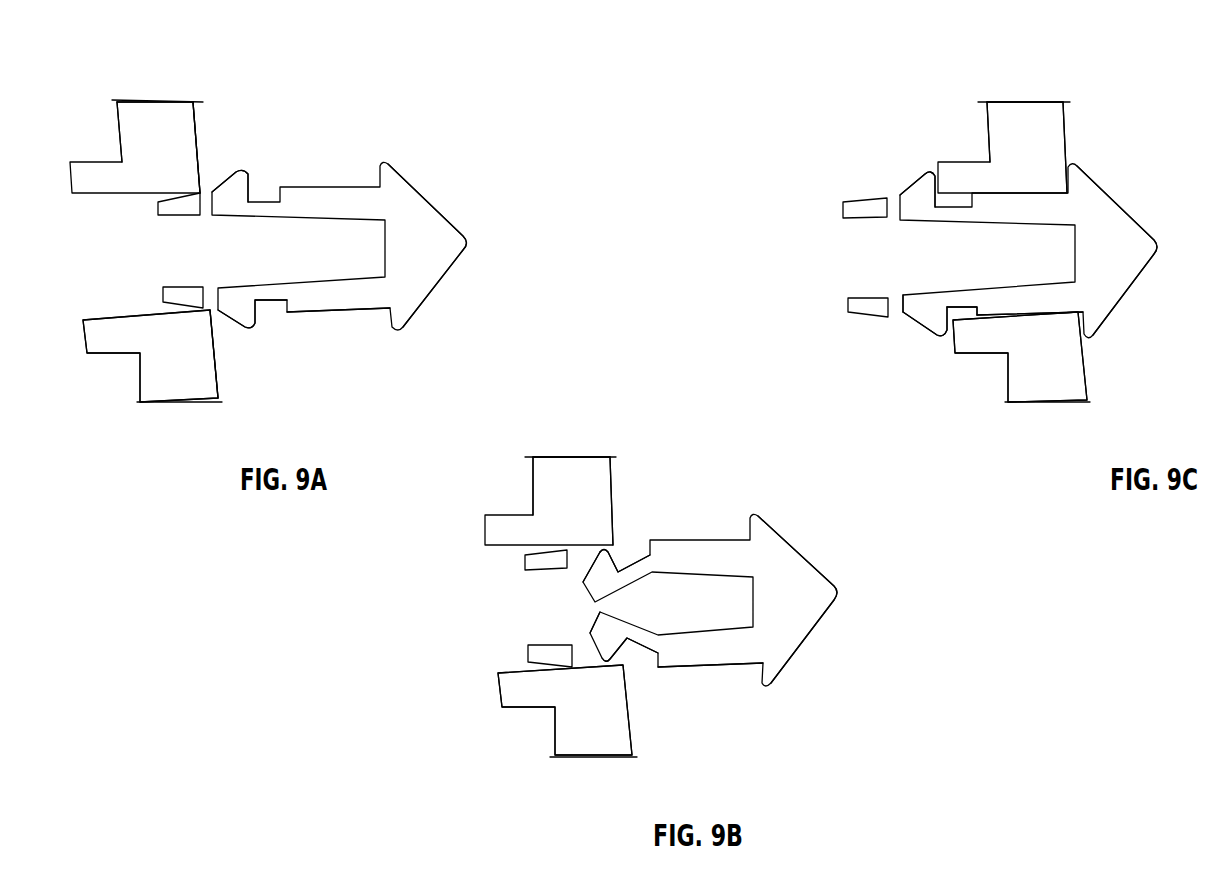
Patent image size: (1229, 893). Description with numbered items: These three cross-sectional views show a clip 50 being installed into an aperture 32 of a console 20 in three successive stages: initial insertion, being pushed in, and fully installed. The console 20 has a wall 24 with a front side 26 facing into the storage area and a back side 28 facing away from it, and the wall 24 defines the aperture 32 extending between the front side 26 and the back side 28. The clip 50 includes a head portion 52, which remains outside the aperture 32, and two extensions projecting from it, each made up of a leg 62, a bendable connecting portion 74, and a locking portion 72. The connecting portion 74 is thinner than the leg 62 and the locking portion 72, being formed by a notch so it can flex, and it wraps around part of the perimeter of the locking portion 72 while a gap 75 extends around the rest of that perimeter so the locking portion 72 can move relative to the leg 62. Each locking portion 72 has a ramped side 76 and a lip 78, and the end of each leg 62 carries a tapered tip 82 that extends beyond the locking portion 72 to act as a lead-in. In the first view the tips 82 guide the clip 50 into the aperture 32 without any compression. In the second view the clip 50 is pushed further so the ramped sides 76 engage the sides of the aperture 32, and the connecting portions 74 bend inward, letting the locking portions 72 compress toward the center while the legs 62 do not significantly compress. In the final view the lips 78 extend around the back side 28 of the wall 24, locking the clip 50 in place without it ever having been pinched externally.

In FIG. 9A, the console 20 is at (221, 388).
In FIG. 9B, the console 20 is at (635, 742).
In FIG. 9C, the console 20 is at (1089, 387).
In FIG. 9A, the wall 24 is at (140, 115).
In FIG. 9B, the wall 24 is at (555, 468).
In FIG. 9C, the wall 24 is at (1010, 115).
In FIG. 9A, the front side 26 is at (198, 117).
In FIG. 9B, the front side 26 is at (613, 472).
In FIG. 9C, the front side 26 is at (1067, 118).
In FIG. 9A, the back side 28 is at (115, 118).
In FIG. 9B, the back side 28 is at (532, 473).
In FIG. 9C, the back side 28 is at (983, 117).
In FIG. 9A, the aperture 32 is at (80, 305).
In FIG. 9B, the aperture 32 is at (494, 660).
In FIG. 9C, the aperture 32 is at (1008, 321).
In FIG. 9A, the clip 50 is at (414, 323).
In FIG. 9B, the clip 50 is at (814, 649).
In FIG. 9C, the clip 50 is at (1141, 289).
In FIG. 9A, the head portion 52 is at (425, 190).
In FIG. 9B, the head portion 52 is at (813, 560).
In FIG. 9C, the head portion 52 is at (1135, 212).
In FIG. 9A, the leg 62 is at (342, 312).
In FIG. 9B, the leg 62 is at (717, 667).
In FIG. 9C, the leg 62 is at (1047, 315).
In FIG. 9A, the locking portion 72 is at (237, 170).
In FIG. 9B, the locking portion 72 is at (592, 645).
In FIG. 9C, the locking portion 72 is at (920, 175).
In FIG. 9A, the connecting portion 74 is at (268, 300).
In FIG. 9B, the connecting portion 74 is at (637, 647).
In FIG. 9C, the connecting portion 74 is at (965, 310).
In FIG. 9A, the gap 75 is at (202, 193).
In FIG. 9B, the ramped side 76 is at (587, 568).
In FIG. 9C, the ramped side 76 is at (915, 325).
In FIG. 9B, the lip 78 is at (613, 555).
In FIG. 9C, the lip 78 is at (947, 340).
In FIG. 9A, the tip 82 is at (173, 303).
In FIG. 9B, the tip 82 is at (540, 662).
In FIG. 9C, the tip 82 is at (865, 202).